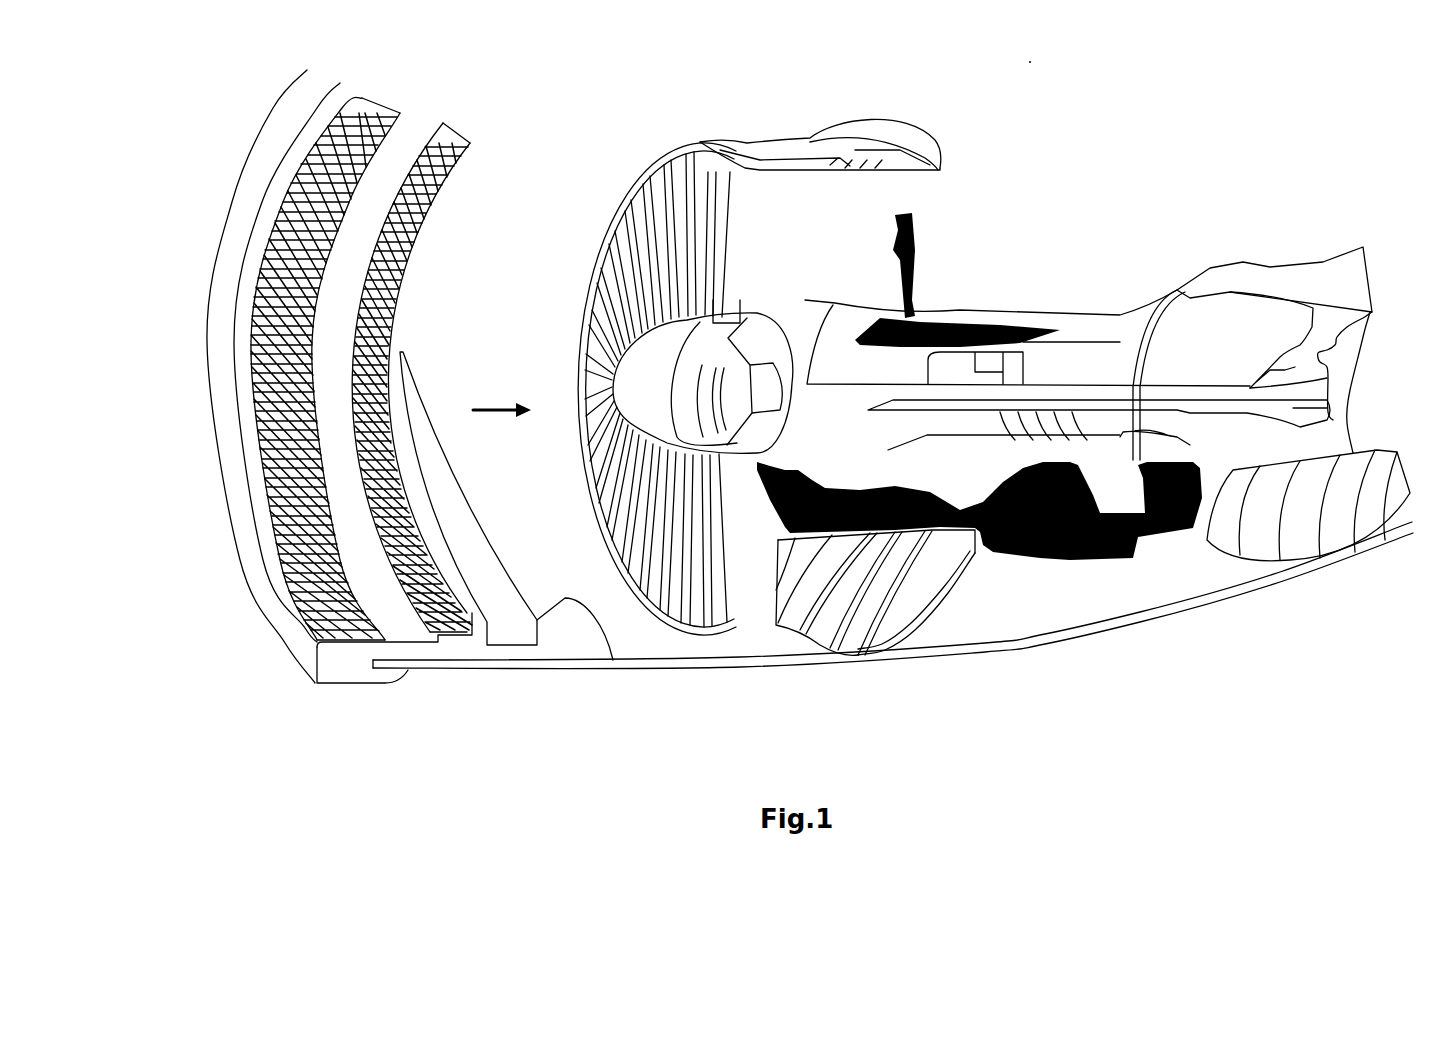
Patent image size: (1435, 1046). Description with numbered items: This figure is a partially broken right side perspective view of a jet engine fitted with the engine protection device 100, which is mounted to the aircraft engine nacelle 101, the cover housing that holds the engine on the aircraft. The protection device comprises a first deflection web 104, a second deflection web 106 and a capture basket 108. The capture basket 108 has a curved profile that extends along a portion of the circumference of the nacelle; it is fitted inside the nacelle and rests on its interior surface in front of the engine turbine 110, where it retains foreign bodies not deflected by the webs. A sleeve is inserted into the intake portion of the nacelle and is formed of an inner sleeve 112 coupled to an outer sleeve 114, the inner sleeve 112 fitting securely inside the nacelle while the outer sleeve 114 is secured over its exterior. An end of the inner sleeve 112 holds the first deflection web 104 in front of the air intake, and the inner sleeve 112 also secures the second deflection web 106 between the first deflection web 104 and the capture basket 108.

The engine protection device 100 is at (287, 695).
The aircraft engine nacelle 101 is at (1048, 647).
The first deflection web 104 is at (273, 437).
The second deflection web 106 is at (377, 245).
The capture basket 108 is at (563, 643).
The engine turbine 110 is at (1143, 537).
The inner sleeve 112 is at (453, 647).
The outer sleeve 114 is at (363, 673).